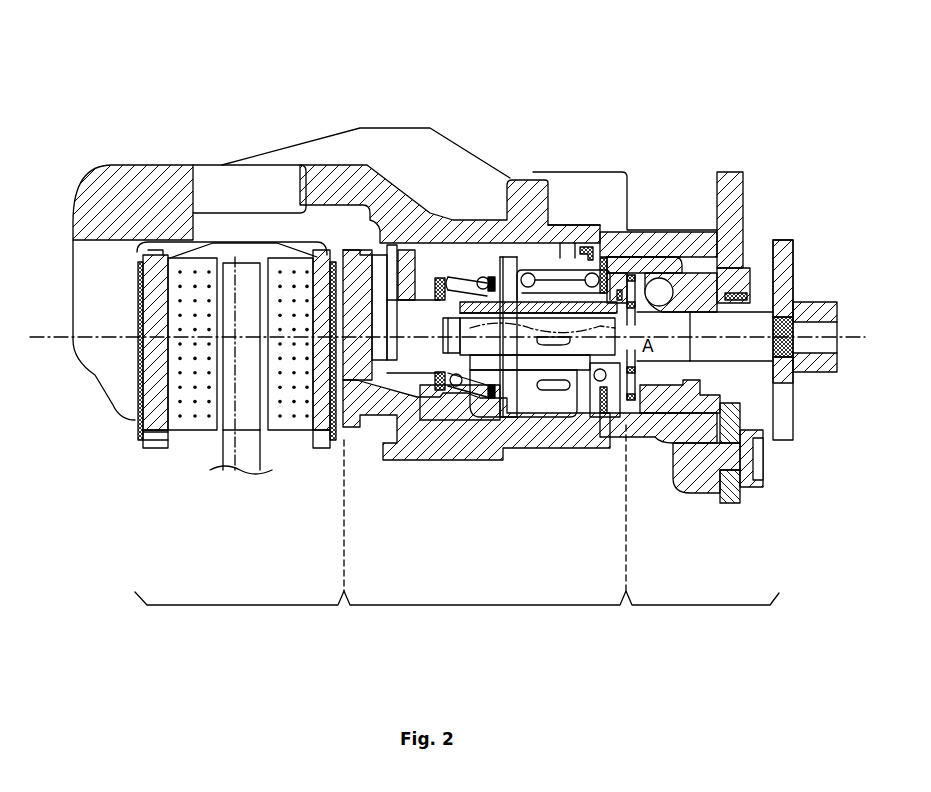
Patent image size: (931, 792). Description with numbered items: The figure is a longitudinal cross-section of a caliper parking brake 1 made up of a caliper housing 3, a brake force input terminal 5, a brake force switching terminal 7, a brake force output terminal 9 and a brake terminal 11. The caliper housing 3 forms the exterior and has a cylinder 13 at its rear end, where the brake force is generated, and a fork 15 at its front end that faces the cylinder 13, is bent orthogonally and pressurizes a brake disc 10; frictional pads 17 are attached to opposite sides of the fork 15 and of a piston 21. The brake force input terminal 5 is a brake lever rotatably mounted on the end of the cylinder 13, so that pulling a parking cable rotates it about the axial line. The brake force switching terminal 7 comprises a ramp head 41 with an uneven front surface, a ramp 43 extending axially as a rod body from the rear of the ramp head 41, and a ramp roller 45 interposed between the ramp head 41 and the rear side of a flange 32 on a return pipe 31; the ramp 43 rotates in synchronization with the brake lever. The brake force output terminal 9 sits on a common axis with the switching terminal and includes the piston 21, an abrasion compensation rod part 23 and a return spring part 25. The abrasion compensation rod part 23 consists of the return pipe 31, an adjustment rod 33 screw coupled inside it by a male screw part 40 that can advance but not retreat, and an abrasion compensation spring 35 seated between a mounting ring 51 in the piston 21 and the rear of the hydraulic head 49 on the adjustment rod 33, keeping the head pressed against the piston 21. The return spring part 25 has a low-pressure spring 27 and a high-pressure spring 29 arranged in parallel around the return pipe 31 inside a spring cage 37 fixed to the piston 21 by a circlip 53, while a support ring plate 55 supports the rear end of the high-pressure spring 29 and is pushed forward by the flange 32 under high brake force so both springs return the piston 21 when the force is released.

The caliper parking brake 1 is at (690, 56).
The caliper housing 3 is at (367, 128).
The brake force input terminal 5 is at (783, 413).
The brake force switching terminal 7 is at (700, 605).
The brake force output terminal 9 is at (483, 605).
The brake disc 10 is at (170, 175).
The brake terminal 11 is at (240, 605).
The cylinder 13 is at (475, 450).
The fork 15 is at (87, 293).
The frictional pads 17 is at (290, 403).
The piston 21 is at (400, 407).
The abrasion compensation rod part 23 is at (435, 433).
The return spring part 25 is at (545, 413).
The low-pressure spring 27 is at (503, 240).
The high-pressure spring 29 is at (550, 280).
The return pipe 31 is at (470, 275).
The flange 32 is at (612, 235).
The adjustment rod 33 is at (460, 395).
The abrasion compensation spring 35 is at (407, 320).
The spring cage 37 is at (527, 397).
The male screw part 40 is at (597, 235).
The ramp head 41 is at (647, 380).
The ramp 43 is at (690, 333).
The ramp roller 45 is at (633, 290).
The hydraulic head 49 is at (233, 257).
The mounting ring 51 is at (485, 377).
The circlip 53 is at (563, 232).
The support ring plate 55 is at (603, 420).